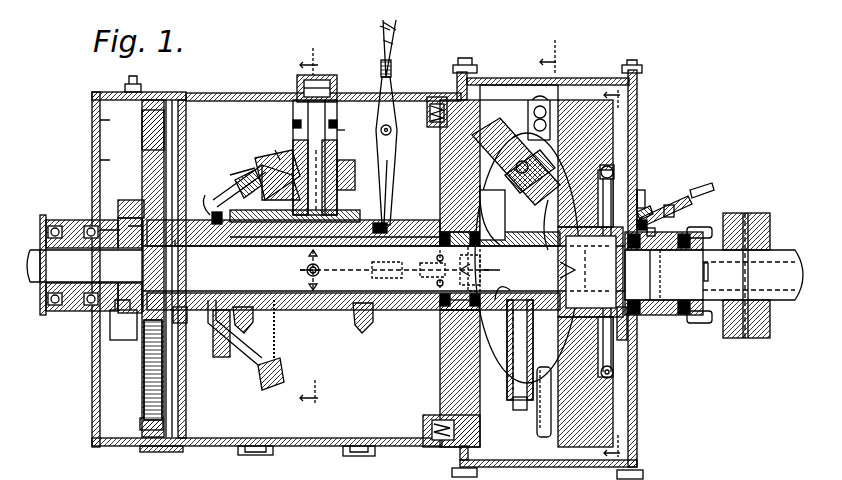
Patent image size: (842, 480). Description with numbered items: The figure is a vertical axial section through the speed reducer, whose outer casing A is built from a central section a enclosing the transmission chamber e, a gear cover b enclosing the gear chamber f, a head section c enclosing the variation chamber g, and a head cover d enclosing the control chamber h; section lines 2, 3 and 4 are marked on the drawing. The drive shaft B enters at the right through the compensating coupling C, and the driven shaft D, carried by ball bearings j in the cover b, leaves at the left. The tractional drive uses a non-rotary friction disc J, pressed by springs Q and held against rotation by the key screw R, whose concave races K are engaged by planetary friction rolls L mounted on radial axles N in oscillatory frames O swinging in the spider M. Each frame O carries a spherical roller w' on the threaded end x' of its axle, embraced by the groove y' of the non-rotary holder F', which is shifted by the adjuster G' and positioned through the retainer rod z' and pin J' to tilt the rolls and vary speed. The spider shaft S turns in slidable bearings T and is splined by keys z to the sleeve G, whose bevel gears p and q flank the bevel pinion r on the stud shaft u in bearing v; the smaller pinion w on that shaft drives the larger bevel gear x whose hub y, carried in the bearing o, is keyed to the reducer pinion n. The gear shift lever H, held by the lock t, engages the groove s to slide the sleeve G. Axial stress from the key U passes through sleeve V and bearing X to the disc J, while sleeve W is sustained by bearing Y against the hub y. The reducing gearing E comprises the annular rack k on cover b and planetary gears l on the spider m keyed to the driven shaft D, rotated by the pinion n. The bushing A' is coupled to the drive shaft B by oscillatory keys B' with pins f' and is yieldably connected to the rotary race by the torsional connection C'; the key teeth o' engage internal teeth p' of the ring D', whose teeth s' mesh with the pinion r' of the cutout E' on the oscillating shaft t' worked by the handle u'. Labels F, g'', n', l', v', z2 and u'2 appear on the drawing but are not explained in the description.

The outer casing A is at (242, 274).
The central section a is at (232, 94).
The gear cover b is at (93, 146).
The head section c is at (584, 84).
The annular rack k is at (140, 424).
The planetary gears l is at (146, 130).
The gear chamber f is at (124, 215).
The rotary spider m is at (128, 206).
The reducer drive pinion n is at (121, 226).
The speed reducing gearing E is at (139, 268).
The driven shaft D is at (85, 265).
The ball bearings j is at (104, 290).
The spider shaft S is at (384, 265).
The slidable bearings T is at (331, 270).
The pin g'' is at (485, 271).
The pinion bearing o is at (182, 253).
The key U is at (320, 270).
The sleeve V is at (325, 270).
The sleeve W is at (300, 264).
The slidable sleeve G is at (295, 238).
The thrust bearing Y is at (235, 307).
The reverse bevel gear q is at (270, 284).
The groove s is at (368, 326).
The bevel gear F is at (256, 176).
The bevel gear p is at (275, 187).
The large bevel gear x is at (233, 175).
The gear hub y is at (200, 203).
The keys z is at (221, 213).
The small bevel pinion w is at (272, 143).
The stud shaft u is at (315, 145).
The stud shaft bearing v is at (345, 125).
The bevel pinion r is at (346, 179).
The gear shift lever H is at (397, 44).
The lock t is at (398, 104).
The thrust bearing X is at (440, 236).
The stop z2 is at (389, 223).
The springs Q is at (440, 125).
The key screw R is at (450, 79).
The non-rotary friction disc J is at (446, 273).
The friction races K is at (470, 420).
The planetary friction rolls L is at (525, 250).
The radial axles N is at (530, 179).
The oscillatory frames O is at (520, 122).
The variation chamber g is at (524, 117).
The spherical roller w' is at (531, 105).
The threaded axle end x' is at (530, 128).
The key pins f' is at (545, 217).
The spider member M is at (514, 348).
The rod v' is at (520, 350).
The groove y' is at (530, 409).
The manual adjuster G' is at (446, 320).
The control chamber h is at (591, 273).
The pin J' is at (630, 269).
The torsionally responsive connection C' is at (635, 376).
The pin n' is at (605, 164).
The oscillatory ring D' is at (638, 324).
The retainer rod z' is at (590, 272).
The handle u' is at (588, 267).
The oscillatory keys B' is at (668, 275).
The drive shaft B is at (738, 275).
The bushing A' is at (637, 275).
The peripheral teeth o' is at (664, 275).
The collar l' is at (657, 275).
The compensating coupling C is at (746, 292).
The cutout E' is at (668, 193).
The handle u'2 is at (706, 189).
The oscillating shaft t' is at (677, 208).
The cutout pinion r' is at (647, 188).
The head cover d is at (638, 176).
The ring teeth s' is at (644, 221).
The internal teeth p' is at (658, 233).
The roll holder F' is at (529, 80).
The section line 4 is at (315, 226).
The section line 2 is at (552, 55).
The section line 3 is at (614, 273).
The transmission chamber e is at (229, 125).